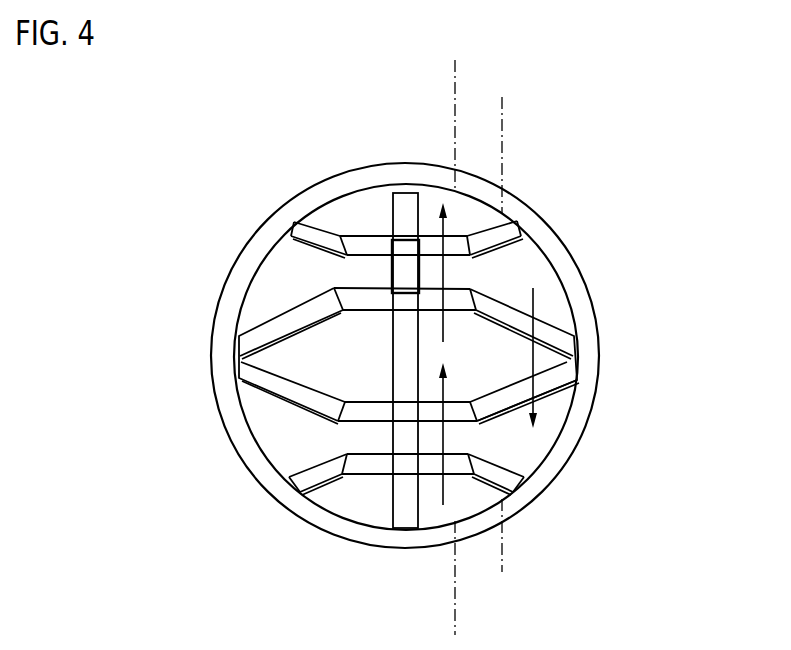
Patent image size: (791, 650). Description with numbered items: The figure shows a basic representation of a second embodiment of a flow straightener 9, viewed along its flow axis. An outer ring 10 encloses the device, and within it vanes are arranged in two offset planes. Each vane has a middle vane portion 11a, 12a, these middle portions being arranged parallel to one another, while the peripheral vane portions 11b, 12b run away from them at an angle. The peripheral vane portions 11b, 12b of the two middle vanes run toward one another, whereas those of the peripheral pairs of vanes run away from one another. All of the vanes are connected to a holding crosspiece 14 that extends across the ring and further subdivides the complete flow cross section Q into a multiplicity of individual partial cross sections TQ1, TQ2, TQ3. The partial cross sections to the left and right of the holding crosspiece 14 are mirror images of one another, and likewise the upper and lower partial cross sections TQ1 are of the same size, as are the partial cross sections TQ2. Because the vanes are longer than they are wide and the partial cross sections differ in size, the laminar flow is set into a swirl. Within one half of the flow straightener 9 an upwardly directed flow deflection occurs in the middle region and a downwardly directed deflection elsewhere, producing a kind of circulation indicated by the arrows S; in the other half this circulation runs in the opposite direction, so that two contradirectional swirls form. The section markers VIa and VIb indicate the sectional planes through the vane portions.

The flow straightener 9 is at (398, 315).
The outer ring 10 is at (266, 226).
The holding crosspiece 14 is at (413, 353).
The middle vane portion 11a is at (369, 294).
The peripheral vane portion 11b is at (545, 323).
The middle vane portion 12a is at (380, 245).
The peripheral vane portion 12b is at (492, 234).
The partial cross section TQ1 is at (273, 578).
The partial cross section TQ2 is at (288, 437).
The partial cross section TQ3 is at (318, 358).
The complete flow cross section Q is at (274, 289).
The flow S is at (445, 272).
The section line VIa is at (542, 75).
The section line VIb is at (587, 137).